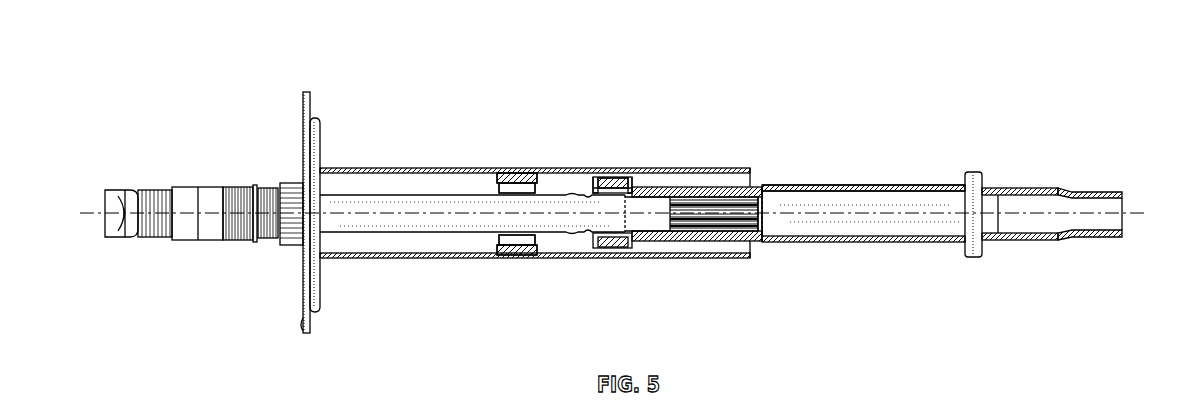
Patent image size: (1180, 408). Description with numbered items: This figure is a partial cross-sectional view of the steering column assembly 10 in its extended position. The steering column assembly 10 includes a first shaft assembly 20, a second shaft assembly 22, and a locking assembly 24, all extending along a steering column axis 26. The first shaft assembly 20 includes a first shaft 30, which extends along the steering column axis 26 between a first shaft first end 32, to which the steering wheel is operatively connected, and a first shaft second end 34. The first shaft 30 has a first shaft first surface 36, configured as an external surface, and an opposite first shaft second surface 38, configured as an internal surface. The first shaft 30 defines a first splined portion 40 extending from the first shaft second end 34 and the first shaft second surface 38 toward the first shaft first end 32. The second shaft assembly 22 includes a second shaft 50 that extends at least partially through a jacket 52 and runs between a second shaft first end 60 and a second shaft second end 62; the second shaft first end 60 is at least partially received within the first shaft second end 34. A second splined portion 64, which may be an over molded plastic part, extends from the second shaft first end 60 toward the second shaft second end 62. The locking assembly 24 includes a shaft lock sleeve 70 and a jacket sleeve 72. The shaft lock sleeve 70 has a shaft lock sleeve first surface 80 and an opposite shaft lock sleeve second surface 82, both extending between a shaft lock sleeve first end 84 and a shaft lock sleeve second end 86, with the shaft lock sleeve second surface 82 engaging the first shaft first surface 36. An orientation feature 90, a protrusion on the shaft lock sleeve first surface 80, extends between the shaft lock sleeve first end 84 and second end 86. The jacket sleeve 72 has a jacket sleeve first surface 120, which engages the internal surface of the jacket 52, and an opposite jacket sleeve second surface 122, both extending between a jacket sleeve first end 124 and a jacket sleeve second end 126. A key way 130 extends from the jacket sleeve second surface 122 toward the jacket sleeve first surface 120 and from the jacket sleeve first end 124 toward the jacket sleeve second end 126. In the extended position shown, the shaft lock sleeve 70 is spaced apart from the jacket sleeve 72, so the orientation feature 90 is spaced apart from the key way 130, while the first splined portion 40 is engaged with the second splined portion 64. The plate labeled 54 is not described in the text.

The steering column assembly 10 is at (1113, 68).
The first shaft assembly 20 is at (896, 181).
The second shaft assembly 22 is at (441, 165).
The locking assembly 24 is at (672, 310).
The steering column axis 26 is at (1130, 217).
The first shaft 30 is at (867, 183).
The first shaft first end 32 is at (1123, 195).
The first shaft second end 34 is at (586, 196).
The first shaft first surface 36 is at (813, 184).
The first shaft second surface 38 is at (828, 193).
The first splined portion 40 is at (765, 195).
The second shaft 50 is at (390, 200).
The jacket 52 is at (335, 164).
The flange plate 54 is at (307, 88).
The second shaft first end 60 is at (765, 215).
The second shaft second end 62 is at (322, 215).
The second splined portion 64 is at (712, 218).
The shaft lock sleeve 70 is at (640, 248).
The jacket sleeve 72 is at (550, 242).
The shaft lock sleeve first surface 80 is at (613, 177).
The shaft lock sleeve second surface 82 is at (623, 177).
The shaft lock sleeve first end 84 is at (646, 178).
The shaft lock sleeve second end 86 is at (591, 180).
The orientation feature 90 is at (610, 177).
The jacket sleeve first surface 120 is at (505, 172).
The jacket sleeve second surface 122 is at (512, 173).
The jacket sleeve first end 124 is at (548, 256).
The jacket sleeve second end 126 is at (496, 253).
The key way 130 is at (519, 173).